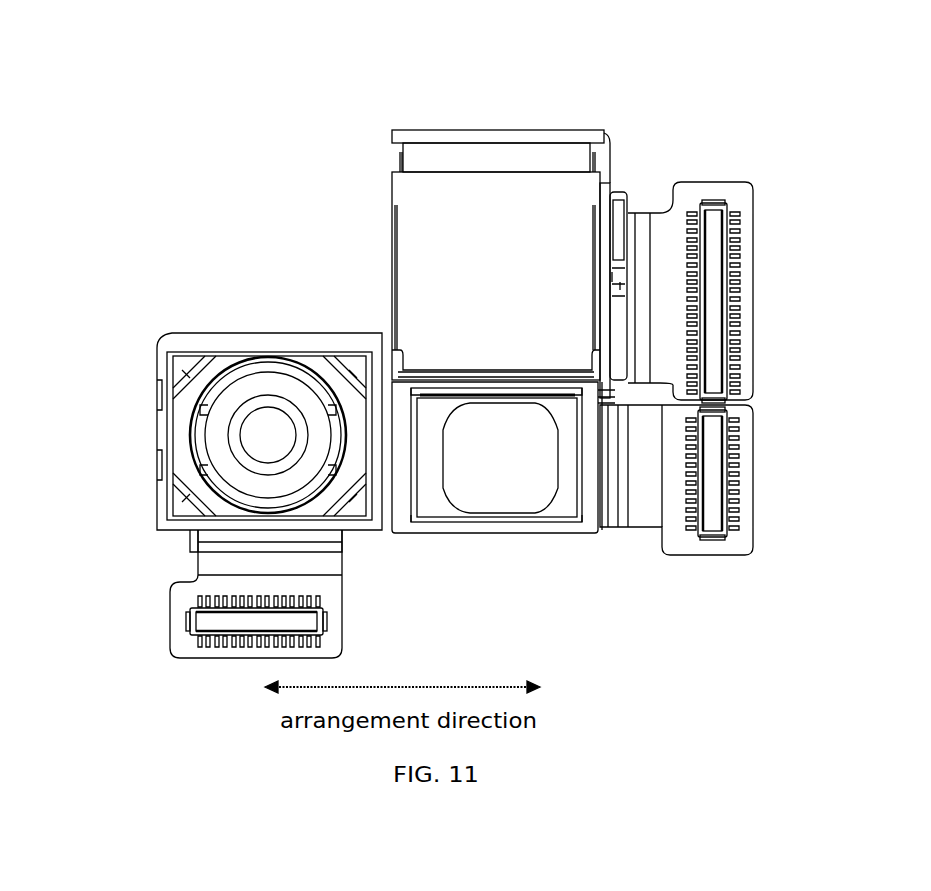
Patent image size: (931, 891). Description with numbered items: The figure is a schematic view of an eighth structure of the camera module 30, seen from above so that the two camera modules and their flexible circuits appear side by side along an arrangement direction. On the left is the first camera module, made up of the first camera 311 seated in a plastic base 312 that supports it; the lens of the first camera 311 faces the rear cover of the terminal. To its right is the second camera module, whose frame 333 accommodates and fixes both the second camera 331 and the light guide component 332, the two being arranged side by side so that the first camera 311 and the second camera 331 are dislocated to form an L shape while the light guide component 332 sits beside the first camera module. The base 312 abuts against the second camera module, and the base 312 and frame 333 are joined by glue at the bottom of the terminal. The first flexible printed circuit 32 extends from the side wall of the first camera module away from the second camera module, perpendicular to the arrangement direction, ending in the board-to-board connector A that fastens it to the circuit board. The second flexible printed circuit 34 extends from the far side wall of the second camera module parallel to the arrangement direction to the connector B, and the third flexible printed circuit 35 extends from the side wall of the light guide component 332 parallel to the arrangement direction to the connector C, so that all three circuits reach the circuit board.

The camera module 30 is at (370, 103).
The first camera 311 is at (257, 432).
The base 312 is at (172, 362).
The first flexible printed circuit 32 is at (322, 553).
The second camera 331 is at (497, 218).
The light guide component 332 is at (500, 497).
The frame 333 is at (633, 237).
The second flexible printed circuit 34 is at (650, 212).
The third flexible printed circuit 35 is at (640, 498).
The first connector A is at (228, 622).
The second connector B is at (740, 310).
The third connector C is at (740, 455).